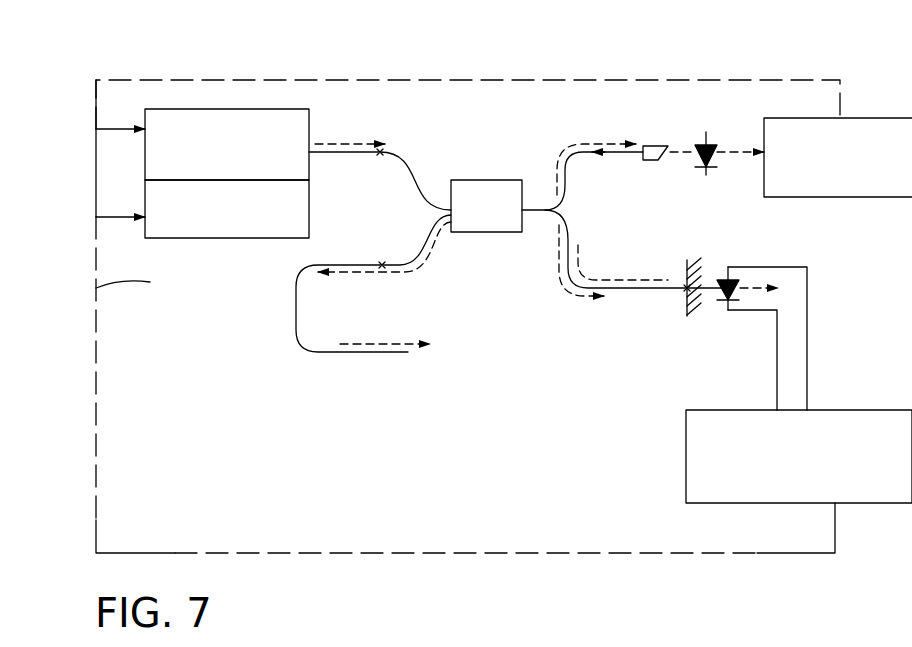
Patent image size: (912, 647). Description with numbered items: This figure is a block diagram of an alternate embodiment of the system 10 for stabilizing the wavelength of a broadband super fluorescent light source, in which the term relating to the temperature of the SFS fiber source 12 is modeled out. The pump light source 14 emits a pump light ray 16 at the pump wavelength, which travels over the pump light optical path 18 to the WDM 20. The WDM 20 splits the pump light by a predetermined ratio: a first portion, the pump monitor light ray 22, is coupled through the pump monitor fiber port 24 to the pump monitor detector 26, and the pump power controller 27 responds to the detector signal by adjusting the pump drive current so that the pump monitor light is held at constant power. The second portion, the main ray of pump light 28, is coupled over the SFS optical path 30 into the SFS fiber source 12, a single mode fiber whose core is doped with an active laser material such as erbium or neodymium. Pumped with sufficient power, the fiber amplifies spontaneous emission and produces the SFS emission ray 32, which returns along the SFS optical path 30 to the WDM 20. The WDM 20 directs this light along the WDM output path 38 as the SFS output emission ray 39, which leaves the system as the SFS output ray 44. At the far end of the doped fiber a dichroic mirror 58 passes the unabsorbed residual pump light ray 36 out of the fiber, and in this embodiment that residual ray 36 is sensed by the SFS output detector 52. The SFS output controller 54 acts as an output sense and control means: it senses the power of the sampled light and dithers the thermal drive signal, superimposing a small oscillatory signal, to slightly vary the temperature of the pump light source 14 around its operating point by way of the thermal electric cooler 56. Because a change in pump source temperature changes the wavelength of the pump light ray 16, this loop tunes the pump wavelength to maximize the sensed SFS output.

The system 10 is at (645, 72).
The SFS fiber source 12 is at (650, 290).
The pump light source 14 is at (227, 144).
The pump light ray 16 is at (330, 146).
The pump light optical path 18 is at (365, 155).
The WDM 20 is at (486, 206).
The pump monitor light ray 22 is at (590, 145).
The pump monitor fiber port 24 is at (615, 155).
The pump monitor detector 26 is at (705, 140).
The pump power controller 27 is at (838, 157).
The main ray of pump light 28 is at (552, 262).
The SFS optical path 30 is at (560, 226).
The SFS emission ray 32 is at (580, 255).
The residual pump light ray 36 is at (706, 280).
The WDM output path 38 is at (295, 325).
The SFS output emission ray 39 is at (410, 258).
The SFS output ray 44 is at (385, 331).
The SFS output detector 52 is at (728, 278).
The SFS output controller 54 is at (799, 456).
The thermal electric cooler (TEC) 56 is at (227, 209).
The dichroic mirror 58 is at (684, 286).